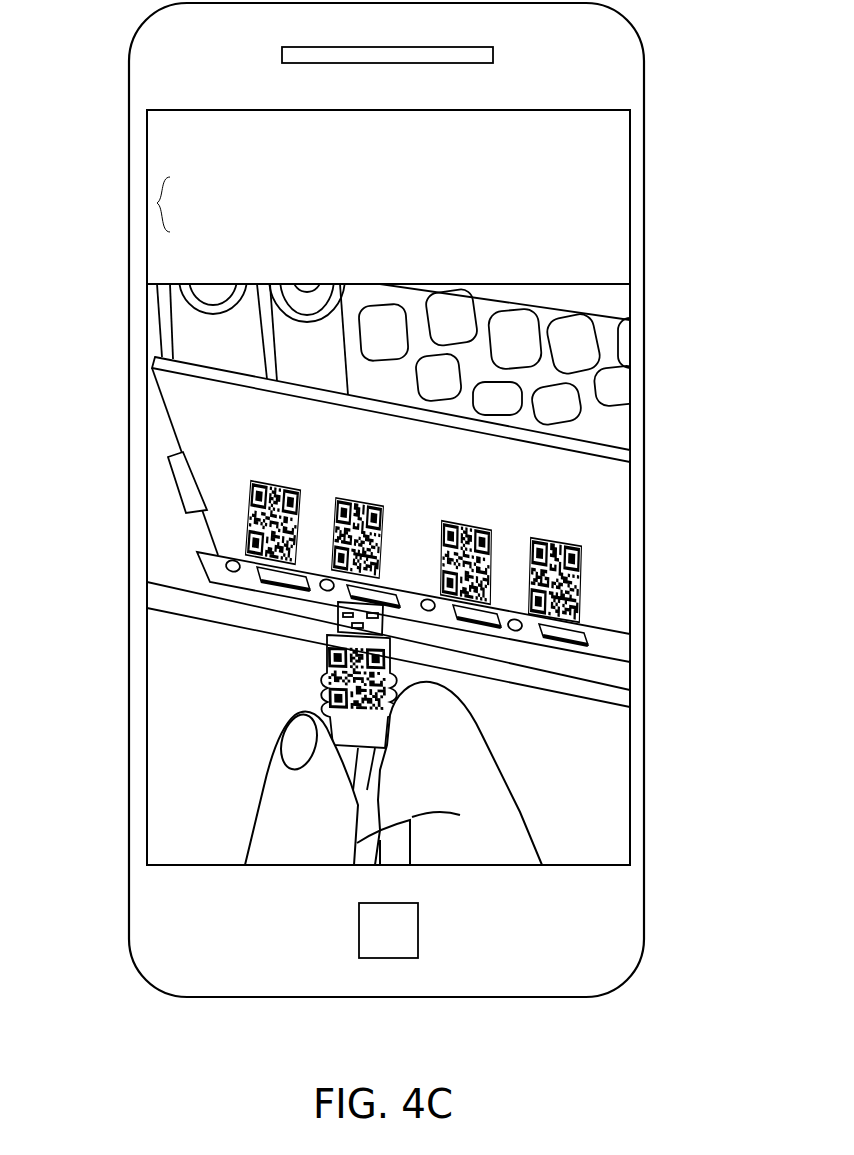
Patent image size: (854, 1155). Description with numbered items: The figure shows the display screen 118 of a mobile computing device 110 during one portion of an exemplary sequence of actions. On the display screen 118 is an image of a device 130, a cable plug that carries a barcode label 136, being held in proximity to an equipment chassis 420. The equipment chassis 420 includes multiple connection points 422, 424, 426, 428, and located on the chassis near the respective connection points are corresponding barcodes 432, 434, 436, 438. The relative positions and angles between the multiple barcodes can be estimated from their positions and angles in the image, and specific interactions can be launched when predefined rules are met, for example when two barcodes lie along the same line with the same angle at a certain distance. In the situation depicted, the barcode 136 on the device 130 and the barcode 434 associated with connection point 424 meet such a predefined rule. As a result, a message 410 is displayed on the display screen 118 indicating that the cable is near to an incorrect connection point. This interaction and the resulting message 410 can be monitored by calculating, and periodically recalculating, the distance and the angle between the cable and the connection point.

The mobile computing device 110 is at (648, 135).
The display screen 118 is at (608, 250).
The message 410 is at (157, 203).
The equipment chassis 420 is at (610, 358).
The connection point 422 is at (272, 575).
The connection point 424 is at (345, 597).
The connection point 426 is at (465, 613).
The connection point 428 is at (563, 630).
The barcode 432 is at (273, 483).
The barcode 434 is at (372, 505).
The barcode 436 is at (483, 528).
The barcode 438 is at (580, 552).
The device 130 is at (390, 648).
The barcode label 136 is at (322, 673).